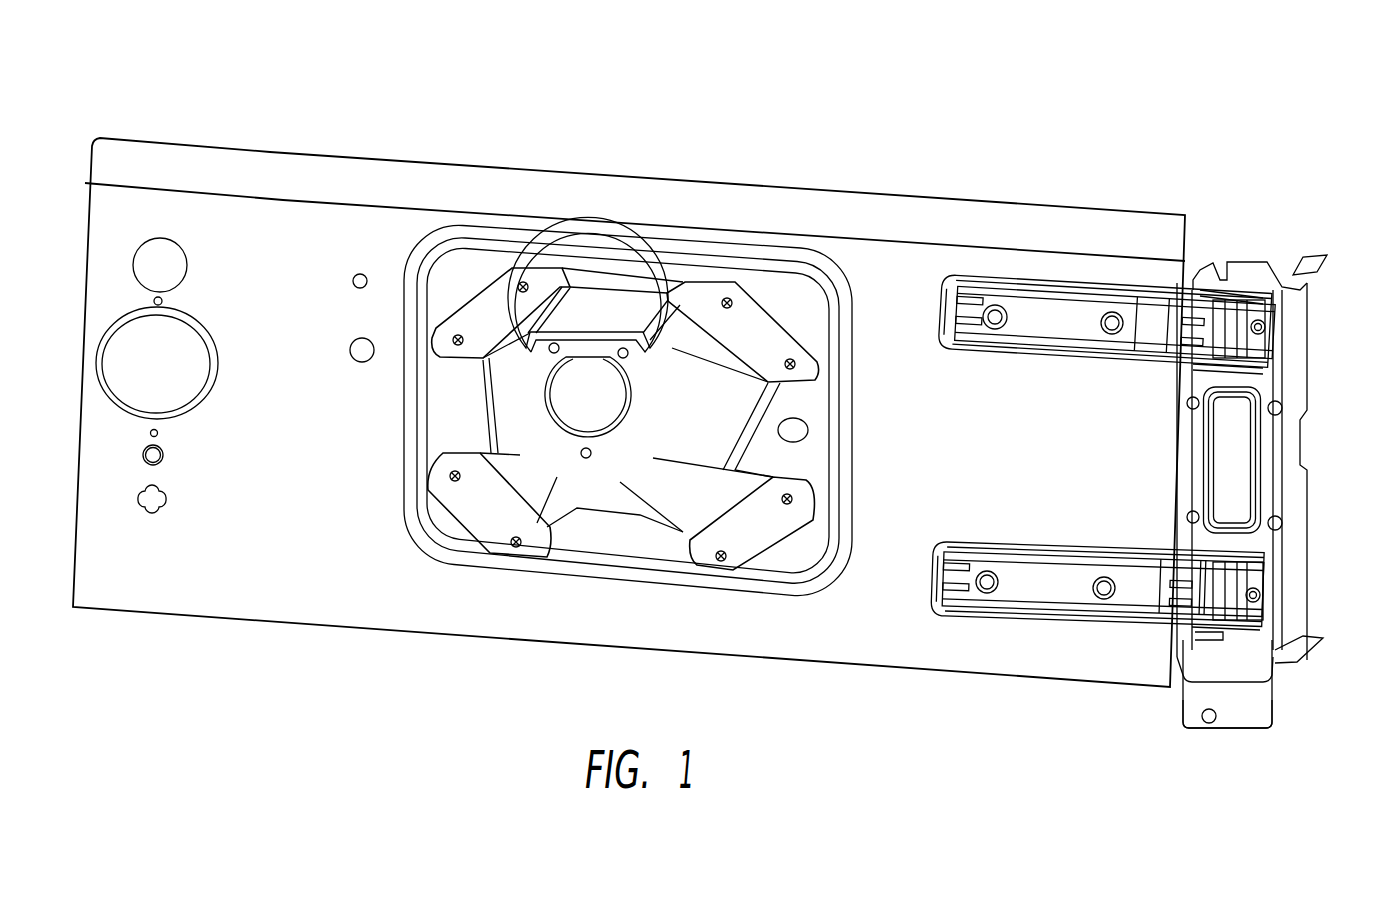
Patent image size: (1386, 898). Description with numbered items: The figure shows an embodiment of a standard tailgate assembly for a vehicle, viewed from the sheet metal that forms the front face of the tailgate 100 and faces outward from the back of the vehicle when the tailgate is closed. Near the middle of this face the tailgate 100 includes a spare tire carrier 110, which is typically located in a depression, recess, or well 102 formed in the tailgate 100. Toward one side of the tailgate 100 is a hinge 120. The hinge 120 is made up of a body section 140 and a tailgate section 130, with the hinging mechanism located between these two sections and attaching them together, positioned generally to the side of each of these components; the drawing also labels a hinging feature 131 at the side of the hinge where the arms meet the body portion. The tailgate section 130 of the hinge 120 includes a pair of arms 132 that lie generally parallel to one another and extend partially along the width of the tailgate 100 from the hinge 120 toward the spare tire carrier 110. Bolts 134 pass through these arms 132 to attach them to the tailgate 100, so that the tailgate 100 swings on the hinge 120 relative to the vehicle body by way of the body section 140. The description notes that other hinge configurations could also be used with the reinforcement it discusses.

The tailgate 100 is at (232, 222).
The depression/recess/well 102 is at (460, 285).
The spare tire carrier 110 is at (598, 355).
The hinge 120 is at (1271, 200).
The tailgate section 130 is at (1140, 461).
The hinge latch 131 is at (1250, 320).
The arms 132 is at (1080, 310).
The bolts 134 is at (987, 593).
The body section 140 is at (1230, 668).